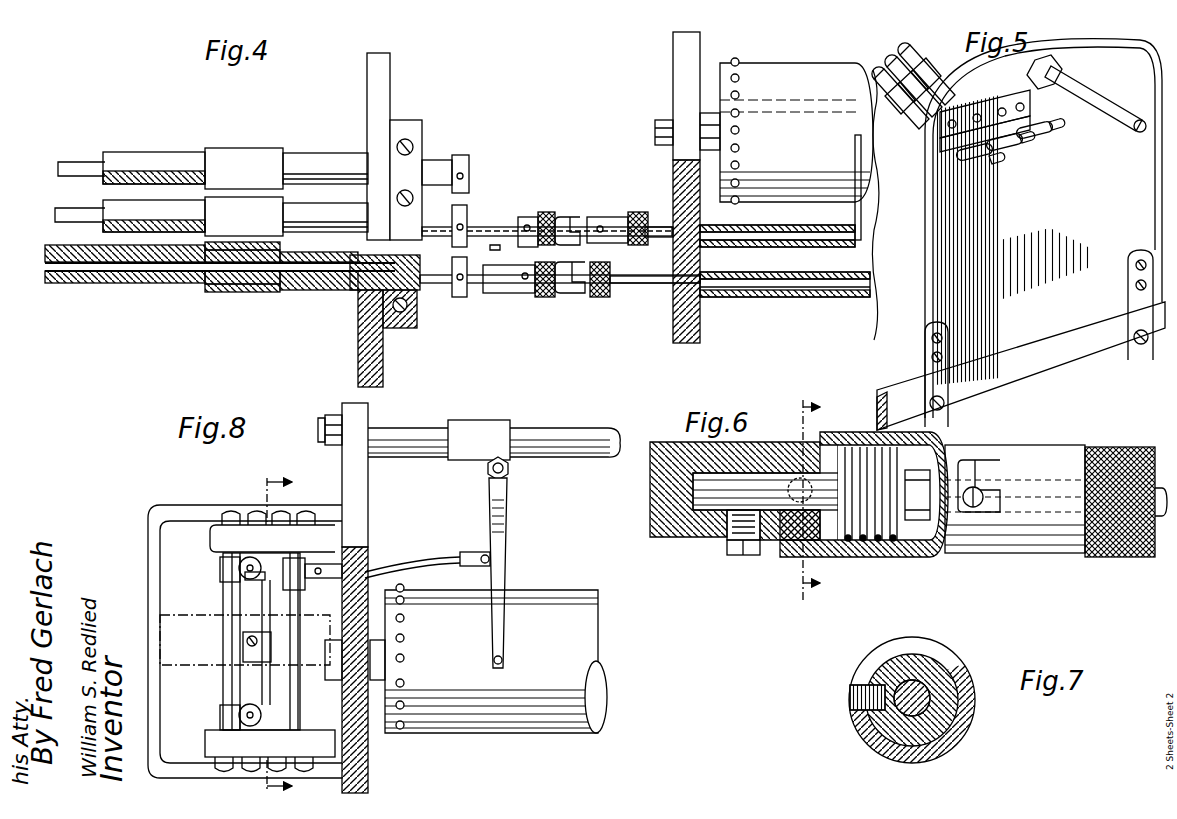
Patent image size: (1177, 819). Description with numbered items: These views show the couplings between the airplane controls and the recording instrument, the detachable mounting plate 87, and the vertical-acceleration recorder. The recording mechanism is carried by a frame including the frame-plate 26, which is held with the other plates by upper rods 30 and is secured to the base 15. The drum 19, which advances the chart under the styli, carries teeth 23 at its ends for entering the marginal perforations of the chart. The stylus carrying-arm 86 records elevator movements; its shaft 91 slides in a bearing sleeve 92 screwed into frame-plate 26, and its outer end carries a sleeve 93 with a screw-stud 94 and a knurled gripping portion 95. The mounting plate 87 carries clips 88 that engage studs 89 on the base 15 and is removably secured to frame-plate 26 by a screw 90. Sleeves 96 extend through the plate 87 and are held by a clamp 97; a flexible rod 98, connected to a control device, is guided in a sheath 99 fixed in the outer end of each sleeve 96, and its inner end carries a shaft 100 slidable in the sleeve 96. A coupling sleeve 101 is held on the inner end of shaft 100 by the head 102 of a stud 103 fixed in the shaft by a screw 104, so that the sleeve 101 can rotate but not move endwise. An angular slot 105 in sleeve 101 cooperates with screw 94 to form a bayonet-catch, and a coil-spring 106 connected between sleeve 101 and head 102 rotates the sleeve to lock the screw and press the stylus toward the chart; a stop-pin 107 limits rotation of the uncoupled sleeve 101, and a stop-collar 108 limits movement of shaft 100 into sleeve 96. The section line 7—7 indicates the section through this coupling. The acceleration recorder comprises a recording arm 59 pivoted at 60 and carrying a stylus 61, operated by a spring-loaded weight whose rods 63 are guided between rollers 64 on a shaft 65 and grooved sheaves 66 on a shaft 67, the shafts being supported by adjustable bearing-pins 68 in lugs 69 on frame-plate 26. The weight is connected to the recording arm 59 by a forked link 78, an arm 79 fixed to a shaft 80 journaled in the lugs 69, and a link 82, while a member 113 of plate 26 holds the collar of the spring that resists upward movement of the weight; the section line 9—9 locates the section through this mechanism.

In FIG. 6, the section line 7— 7 is at (808, 501).
In FIG. 8, the section line 9— 9 is at (271, 638).
In FIG. 5, the base 15 is at (1073, 385).
In FIG. 4, the drum 19 is at (877, 172).
In FIG. 8, the drum 19 is at (600, 660).
In FIG. 4, the teeth 23 is at (740, 131).
In FIG. 8, the teeth 23 is at (405, 659).
In FIG. 4, the frame-plate 26 is at (673, 322).
In FIG. 8, the frame-plate 26 is at (368, 480).
In FIG. 8, the upper rods 30 is at (552, 428).
In FIG. 8, the recording arm 59 is at (508, 520).
In FIG. 8, the pivot 60 is at (499, 456).
In FIG. 8, the stylus 61 is at (503, 661).
In FIG. 8, the rods 63 is at (220, 562).
In FIG. 8, the rollers 64 is at (220, 582).
In FIG. 8, the shaft 65 is at (222, 678).
In FIG. 8, the grooved sheaves 66 is at (250, 579).
In FIG. 8, the shaft 67 is at (272, 690).
In FIG. 8, the adjustable bearing-pins 68 is at (282, 513).
In FIG. 8, the lugs 69 is at (270, 743).
In FIG. 8, the forked link 78 is at (243, 652).
In FIG. 8, the arm 79 is at (310, 582).
In FIG. 8, the shaft 80 is at (322, 655).
In FIG. 8, the link 82 is at (433, 560).
In FIG. 4, the stylus carrying-arm 86 is at (855, 170).
In FIG. 4, the plate 87 is at (390, 79).
In FIG. 5, the plate 87 is at (1043, 228).
In FIG. 5, the clips 88 is at (924, 403).
In FIG. 5, the studs 89 is at (945, 400).
In FIG. 5, the screw 90 is at (1139, 133).
In FIG. 4, the shaft 91 is at (650, 243).
In FIG. 6, the shaft 91 is at (1160, 520).
In FIG. 4, the bearing sleeve 92 is at (748, 248).
In FIG. 4, the sleeve 93 is at (615, 243).
In FIG. 6, the sleeve 93 is at (1040, 447).
In FIG. 4, the screw-stud 94 is at (602, 226).
In FIG. 6, the screw-stud 94 is at (980, 492).
In FIG. 4, the knurled gripping portion 95 is at (636, 212).
In FIG. 6, the knurled gripping portion 95 is at (1118, 447).
In FIG. 4, the sleeves 96 is at (332, 152).
In FIG. 5, the sleeves 96 is at (918, 112).
In FIG. 4, the clamp 97 is at (418, 150).
In FIG. 5, the clamp 97 is at (1032, 102).
In FIG. 4, the flexible rod 98 is at (88, 160).
In FIG. 4, the sheath 99 is at (190, 152).
In FIG. 5, the sheath 99 is at (932, 62).
In FIG. 4, the shaft 100 is at (444, 290).
In FIG. 6, the shaft 100 is at (670, 540).
In FIG. 7, the shaft 100 is at (952, 711).
In FIG. 4, the coupling sleeve 101 is at (578, 294).
In FIG. 5, the coupling sleeve 101 is at (1006, 152).
In FIG. 6, the coupling sleeve 101 is at (888, 558).
In FIG. 7, the coupling sleeve 101 is at (960, 728).
In FIG. 6, the head 102 is at (930, 557).
In FIG. 6, the stud 103 is at (778, 542).
In FIG. 7, the stud 103 is at (925, 688).
In FIG. 4, the screw 104 is at (505, 250).
In FIG. 6, the screw 104 is at (740, 558).
In FIG. 4, the angular slot 105 is at (570, 217).
In FIG. 5, the angular slot 105 is at (992, 164).
In FIG. 6, the angular slot 105 is at (982, 462).
In FIG. 6, the coil-spring 106 is at (852, 545).
In FIG. 4, the stop-pin 107 is at (527, 225).
In FIG. 5, the stop-pin 107 is at (1050, 121).
In FIG. 6, the stop-pin 107 is at (797, 478).
In FIG. 7, the stop-pin 107 is at (852, 712).
In FIG. 4, the stop-collar 108 is at (467, 226).
In FIG. 5, the stop-collar 108 is at (972, 154).
In FIG. 8, the member 113 is at (215, 611).